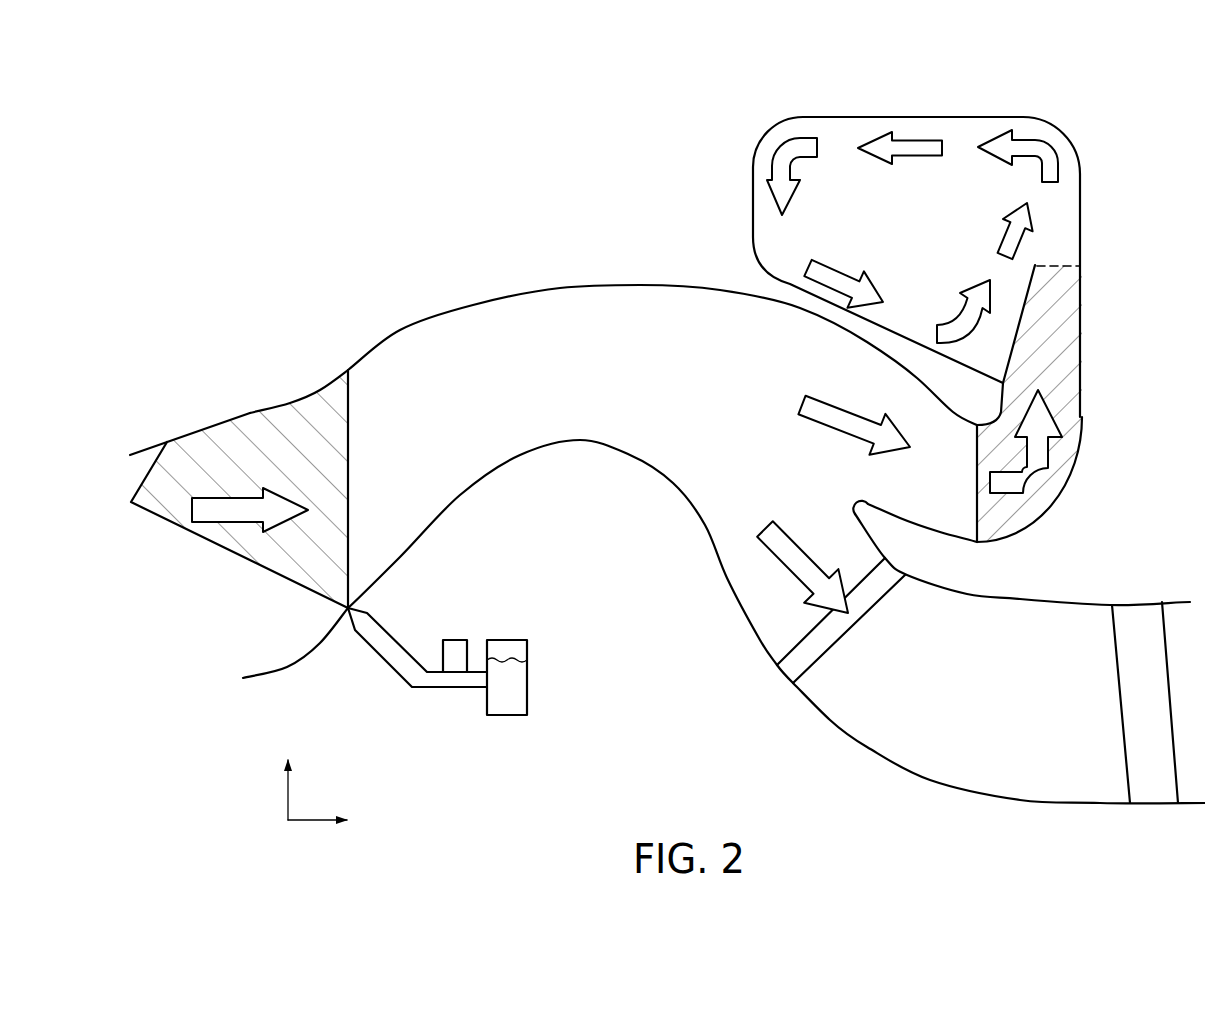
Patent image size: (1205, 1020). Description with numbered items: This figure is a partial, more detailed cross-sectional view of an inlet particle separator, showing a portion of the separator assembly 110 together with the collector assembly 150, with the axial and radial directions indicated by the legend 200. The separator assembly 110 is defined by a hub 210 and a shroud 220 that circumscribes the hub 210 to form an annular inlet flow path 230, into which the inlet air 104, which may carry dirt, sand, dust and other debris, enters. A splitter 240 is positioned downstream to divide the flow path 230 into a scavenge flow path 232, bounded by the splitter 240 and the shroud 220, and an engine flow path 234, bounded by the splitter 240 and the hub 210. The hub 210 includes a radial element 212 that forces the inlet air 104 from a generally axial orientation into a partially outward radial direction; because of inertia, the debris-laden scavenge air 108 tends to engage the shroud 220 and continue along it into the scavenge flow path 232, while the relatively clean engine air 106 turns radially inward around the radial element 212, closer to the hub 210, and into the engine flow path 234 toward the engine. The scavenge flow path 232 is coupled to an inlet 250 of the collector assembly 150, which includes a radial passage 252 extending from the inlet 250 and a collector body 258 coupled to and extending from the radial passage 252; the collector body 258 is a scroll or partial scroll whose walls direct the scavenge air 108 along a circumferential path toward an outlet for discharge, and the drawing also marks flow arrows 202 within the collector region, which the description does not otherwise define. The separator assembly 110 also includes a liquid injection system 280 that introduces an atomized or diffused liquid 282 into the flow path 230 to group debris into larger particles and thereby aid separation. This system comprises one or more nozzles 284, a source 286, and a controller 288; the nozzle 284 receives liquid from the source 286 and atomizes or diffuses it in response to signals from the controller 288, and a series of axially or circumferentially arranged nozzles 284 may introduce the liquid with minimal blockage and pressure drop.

The separator assembly 110 is at (227, 169).
The collector assembly 150 is at (696, 79).
The scavenge air 108 is at (785, 142).
The shroud 220 is at (553, 331).
The collector body 258 is at (877, 221).
The cooling airflow 202 is at (833, 290).
The radial passage 252 is at (1077, 377).
The inlet 250 is at (1010, 527).
The scavenge flow path 232 is at (957, 494).
The flow path 230 is at (408, 497).
The radial element 212 is at (587, 442).
The hub 210 is at (724, 621).
The splitter 240 is at (860, 500).
The engine flow path 234 is at (972, 696).
The engine air 106 is at (772, 522).
The liquid 282 is at (157, 503).
The inlet air 104 is at (227, 523).
The controller 288 is at (457, 640).
The source 286 is at (527, 685).
The nozzle 284 is at (377, 657).
The liquid injection system 280 is at (472, 712).
The legend 200 is at (267, 785).